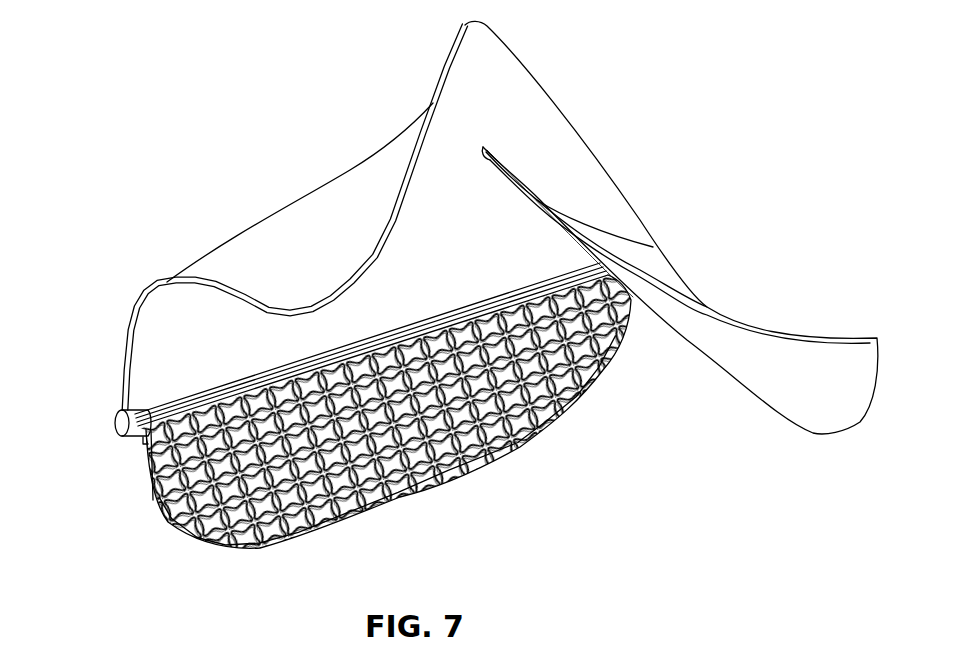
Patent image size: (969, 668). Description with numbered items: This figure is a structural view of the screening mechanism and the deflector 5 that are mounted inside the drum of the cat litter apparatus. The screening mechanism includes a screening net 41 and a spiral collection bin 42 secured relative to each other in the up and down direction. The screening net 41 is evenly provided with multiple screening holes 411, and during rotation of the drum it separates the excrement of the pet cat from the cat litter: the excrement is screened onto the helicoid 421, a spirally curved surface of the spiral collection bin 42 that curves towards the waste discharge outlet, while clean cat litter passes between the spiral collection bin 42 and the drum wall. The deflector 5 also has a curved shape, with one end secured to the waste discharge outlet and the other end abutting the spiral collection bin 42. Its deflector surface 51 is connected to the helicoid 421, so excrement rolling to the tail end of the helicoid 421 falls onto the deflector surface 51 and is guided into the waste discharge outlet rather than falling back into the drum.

The deflector 5 is at (767, 348).
The deflector surface 51 is at (643, 270).
The spiral collection bin 42 is at (295, 242).
The helicoid 421 is at (200, 339).
The screening net 41 is at (197, 410).
The screening holes 411 is at (207, 485).